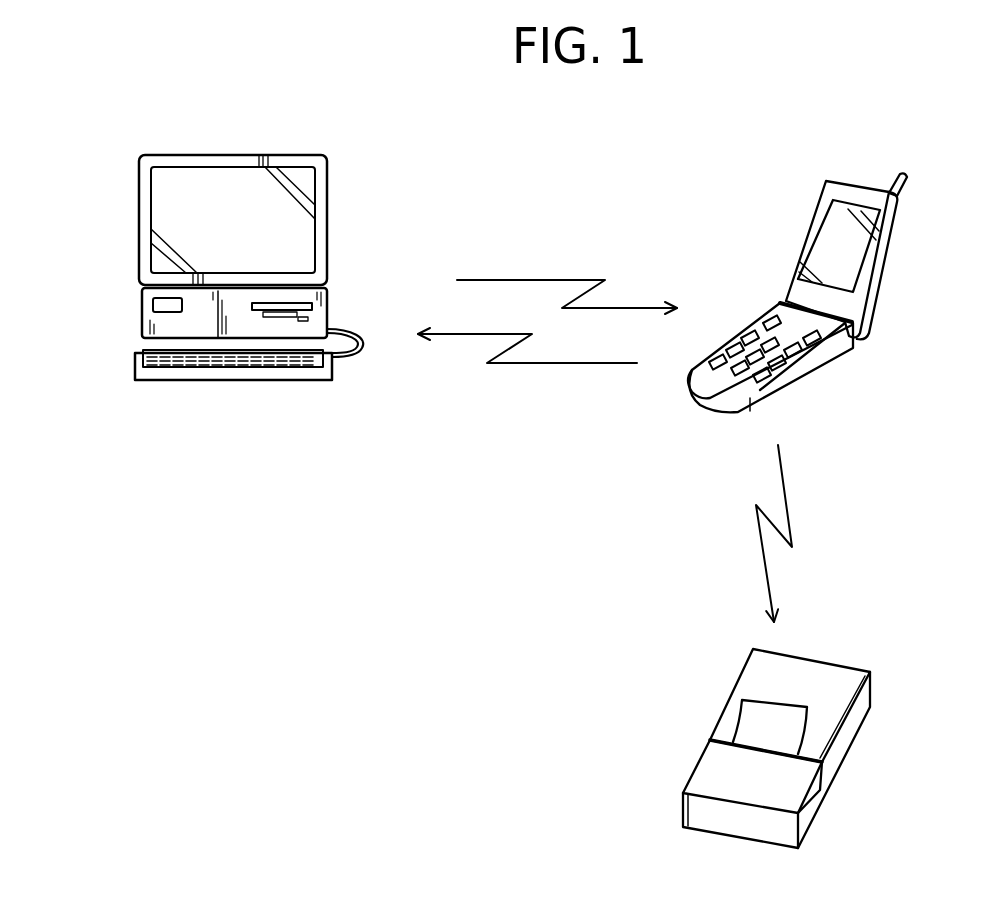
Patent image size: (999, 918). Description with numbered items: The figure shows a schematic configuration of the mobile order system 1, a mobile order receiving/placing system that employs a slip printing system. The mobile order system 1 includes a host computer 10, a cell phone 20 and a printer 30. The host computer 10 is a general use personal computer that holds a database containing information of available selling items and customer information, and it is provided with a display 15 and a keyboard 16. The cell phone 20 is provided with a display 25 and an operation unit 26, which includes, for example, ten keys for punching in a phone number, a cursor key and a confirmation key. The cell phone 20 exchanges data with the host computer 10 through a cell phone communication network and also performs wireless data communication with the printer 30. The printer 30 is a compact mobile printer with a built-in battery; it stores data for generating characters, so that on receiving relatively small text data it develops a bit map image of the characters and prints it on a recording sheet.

The mobile order system 1 is at (688, 192).
The host computer 10 is at (250, 256).
The display 15 is at (292, 237).
The keyboard 16 is at (238, 373).
The cell phone 20 is at (830, 299).
The display 25 is at (852, 260).
The operation unit 26 is at (780, 375).
The mobile printer 30 is at (845, 756).